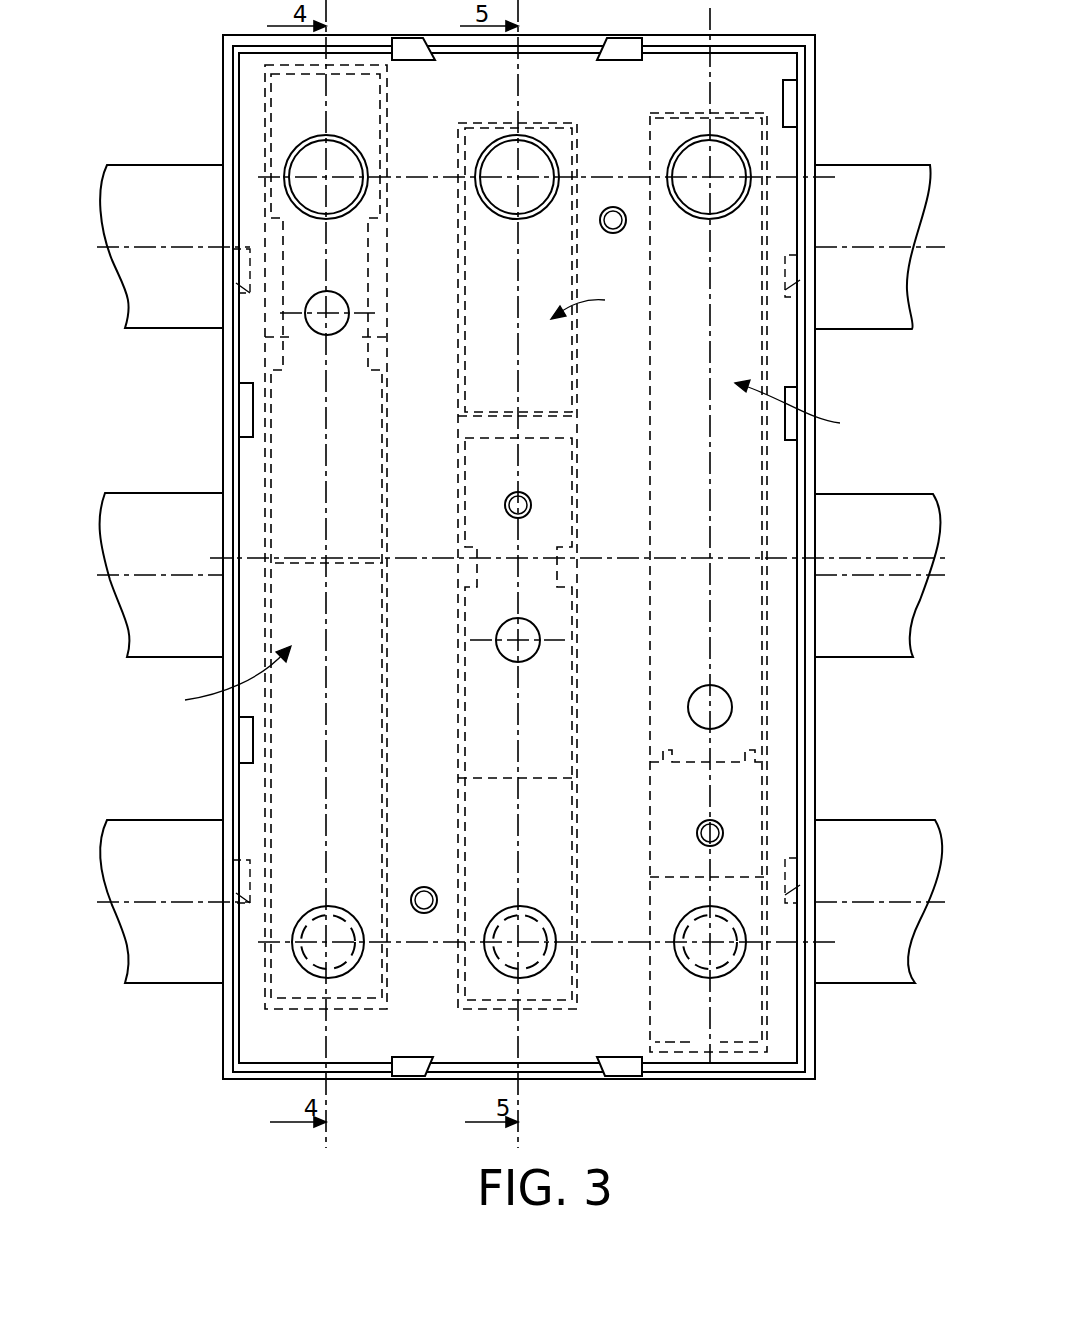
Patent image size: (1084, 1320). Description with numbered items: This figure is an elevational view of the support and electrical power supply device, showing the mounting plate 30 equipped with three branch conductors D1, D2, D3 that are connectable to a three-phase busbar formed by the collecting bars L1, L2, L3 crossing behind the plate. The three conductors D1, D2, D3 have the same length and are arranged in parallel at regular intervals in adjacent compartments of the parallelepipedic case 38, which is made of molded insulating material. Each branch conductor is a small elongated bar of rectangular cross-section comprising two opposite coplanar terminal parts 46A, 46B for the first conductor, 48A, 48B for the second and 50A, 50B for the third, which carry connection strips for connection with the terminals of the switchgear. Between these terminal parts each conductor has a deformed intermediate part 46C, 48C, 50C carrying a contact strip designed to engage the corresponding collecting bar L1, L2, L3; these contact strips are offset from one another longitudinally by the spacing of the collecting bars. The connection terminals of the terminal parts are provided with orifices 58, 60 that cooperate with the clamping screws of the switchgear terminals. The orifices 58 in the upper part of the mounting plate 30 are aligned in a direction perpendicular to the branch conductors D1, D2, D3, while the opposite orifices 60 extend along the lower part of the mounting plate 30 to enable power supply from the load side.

The mounting plate 30 is at (840, 1051).
The parallelepipedic case 38 is at (808, 755).
The terminal part of first branch conductor 46A is at (288, 92).
The terminal part of first branch conductor 46B is at (290, 797).
The deformed intermediate part of first branch conductor 46C is at (290, 450).
The terminal part of second branch conductor 48A is at (552, 255).
The terminal part of second branch conductor 48B is at (552, 792).
The deformed intermediate part of second branch conductor 48C is at (552, 485).
The terminal part of third branch conductor 50A is at (747, 358).
The terminal part of third branch conductor 50B is at (750, 1035).
The deformed intermediate part of third branch conductor 50C is at (748, 688).
The upper orifices 58 is at (335, 160).
The lower orifices 60 is at (345, 960).
The first branch conductor D1 is at (220, 680).
The second branch conductor D2 is at (595, 304).
The third branch conductor D3 is at (804, 409).
The collecting bar L1 is at (112, 185).
The collecting bar L2 is at (112, 510).
The collecting bar L3 is at (112, 838).